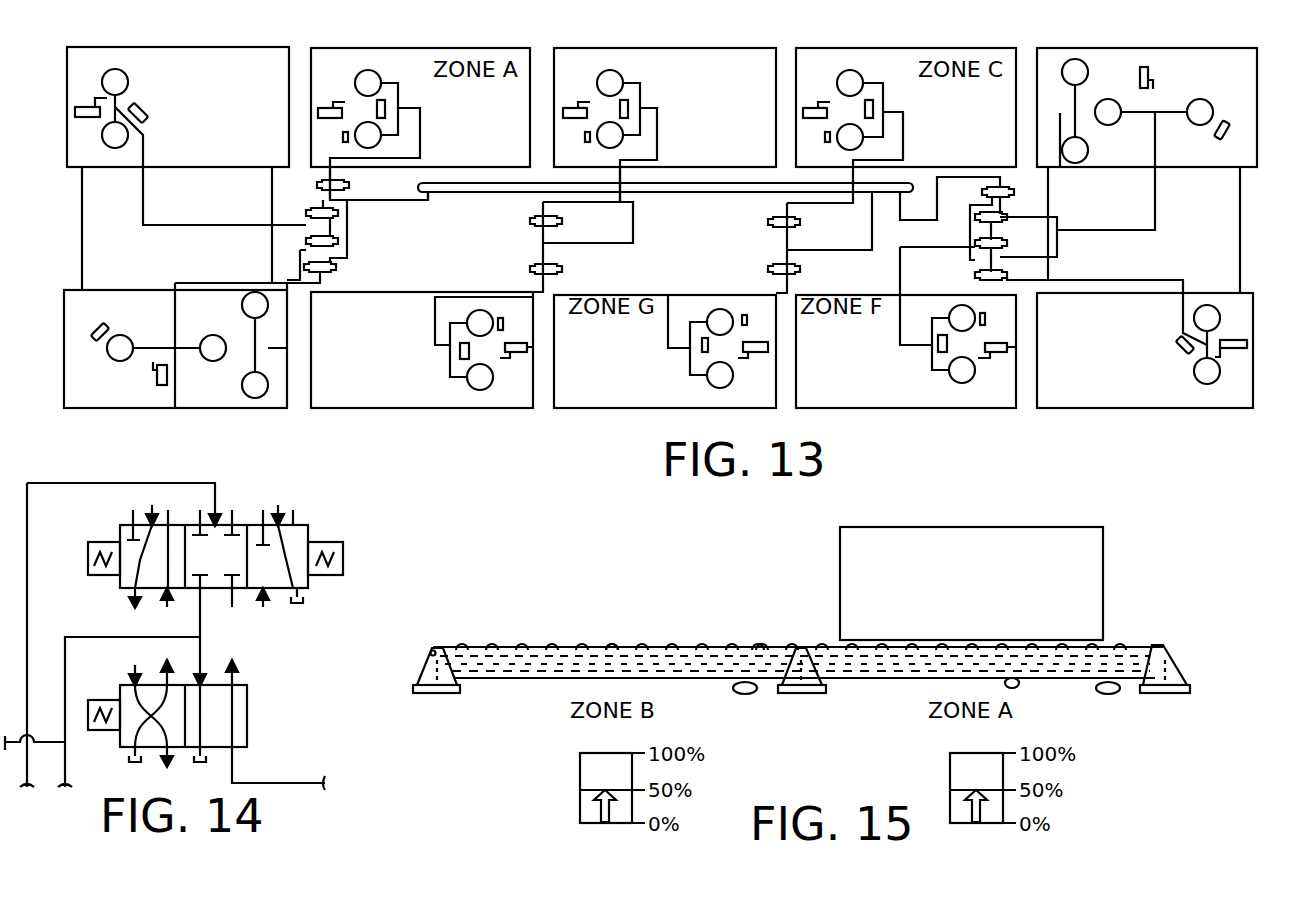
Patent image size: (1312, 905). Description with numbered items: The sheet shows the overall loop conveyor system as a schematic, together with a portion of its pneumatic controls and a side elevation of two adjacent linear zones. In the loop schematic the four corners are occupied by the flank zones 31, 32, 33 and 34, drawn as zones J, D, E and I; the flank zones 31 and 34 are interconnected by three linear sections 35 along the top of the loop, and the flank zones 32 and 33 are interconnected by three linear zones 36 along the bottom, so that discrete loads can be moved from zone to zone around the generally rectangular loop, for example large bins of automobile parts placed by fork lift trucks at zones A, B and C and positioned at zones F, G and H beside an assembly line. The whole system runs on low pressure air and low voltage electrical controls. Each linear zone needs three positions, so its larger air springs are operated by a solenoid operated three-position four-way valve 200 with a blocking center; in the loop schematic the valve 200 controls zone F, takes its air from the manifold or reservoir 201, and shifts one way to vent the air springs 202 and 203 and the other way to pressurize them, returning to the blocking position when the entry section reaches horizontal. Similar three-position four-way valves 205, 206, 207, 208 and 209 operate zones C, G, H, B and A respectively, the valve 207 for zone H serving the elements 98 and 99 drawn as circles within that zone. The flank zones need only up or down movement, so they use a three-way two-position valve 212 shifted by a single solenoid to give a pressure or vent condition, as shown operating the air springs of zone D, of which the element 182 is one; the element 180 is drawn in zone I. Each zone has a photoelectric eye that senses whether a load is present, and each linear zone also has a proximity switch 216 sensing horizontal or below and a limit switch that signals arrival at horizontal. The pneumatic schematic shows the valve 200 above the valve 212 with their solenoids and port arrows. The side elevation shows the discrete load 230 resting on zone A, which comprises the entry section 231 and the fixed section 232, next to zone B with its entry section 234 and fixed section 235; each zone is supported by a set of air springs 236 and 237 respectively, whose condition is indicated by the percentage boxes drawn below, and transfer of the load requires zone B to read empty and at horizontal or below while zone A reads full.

In FIG. 13, the flank zone 31 is at (1257, 102).
In FIG. 13, the flank zone 32 is at (1213, 398).
In FIG. 13, the flank zone 33 is at (218, 395).
In FIG. 13, the flank zone 34 is at (187, 53).
In FIG. 13, the linear section 35 is at (637, 57).
In FIG. 13, the linear zone 36 is at (398, 397).
In FIG. 13, the roller 98 is at (484, 309).
In FIG. 13, the roller 99 is at (490, 390).
In FIG. 13, the roller 180 is at (113, 352).
In FIG. 13, the air spring 182 is at (1197, 125).
In FIG. 13, the three-position four-way valve 200 is at (1007, 187).
In FIG. 14, the three-position four-way valve 200 is at (324, 525).
In FIG. 13, the manifold 201 is at (680, 192).
In FIG. 13, the air spring 202 is at (952, 312).
In FIG. 13, the air spring 203 is at (960, 384).
In FIG. 13, the three-position four-way valve 205 is at (800, 223).
In FIG. 13, the three-position four-way valve 206 is at (768, 270).
In FIG. 13, the three-position four-way valve 207 is at (565, 270).
In FIG. 13, the three-position four-way valve 208 is at (528, 216).
In FIG. 13, the three-position four-way valve 209 is at (316, 185).
In FIG. 13, the three-way two-position valve 212 is at (1000, 220).
In FIG. 14, the three-way two-position valve 212 is at (260, 710).
In FIG. 15, the proximity switch 216 is at (1017, 688).
In FIG. 15, the discrete load 230 is at (1103, 543).
In FIG. 15, the entry section 231 is at (1130, 648).
In FIG. 15, the fixed section 232 is at (907, 680).
In FIG. 15, the entry section 234 is at (752, 648).
In FIG. 15, the fixed section 235 is at (600, 645).
In FIG. 15, the air springs 236 is at (1115, 695).
In FIG. 15, the air springs 237 is at (748, 695).